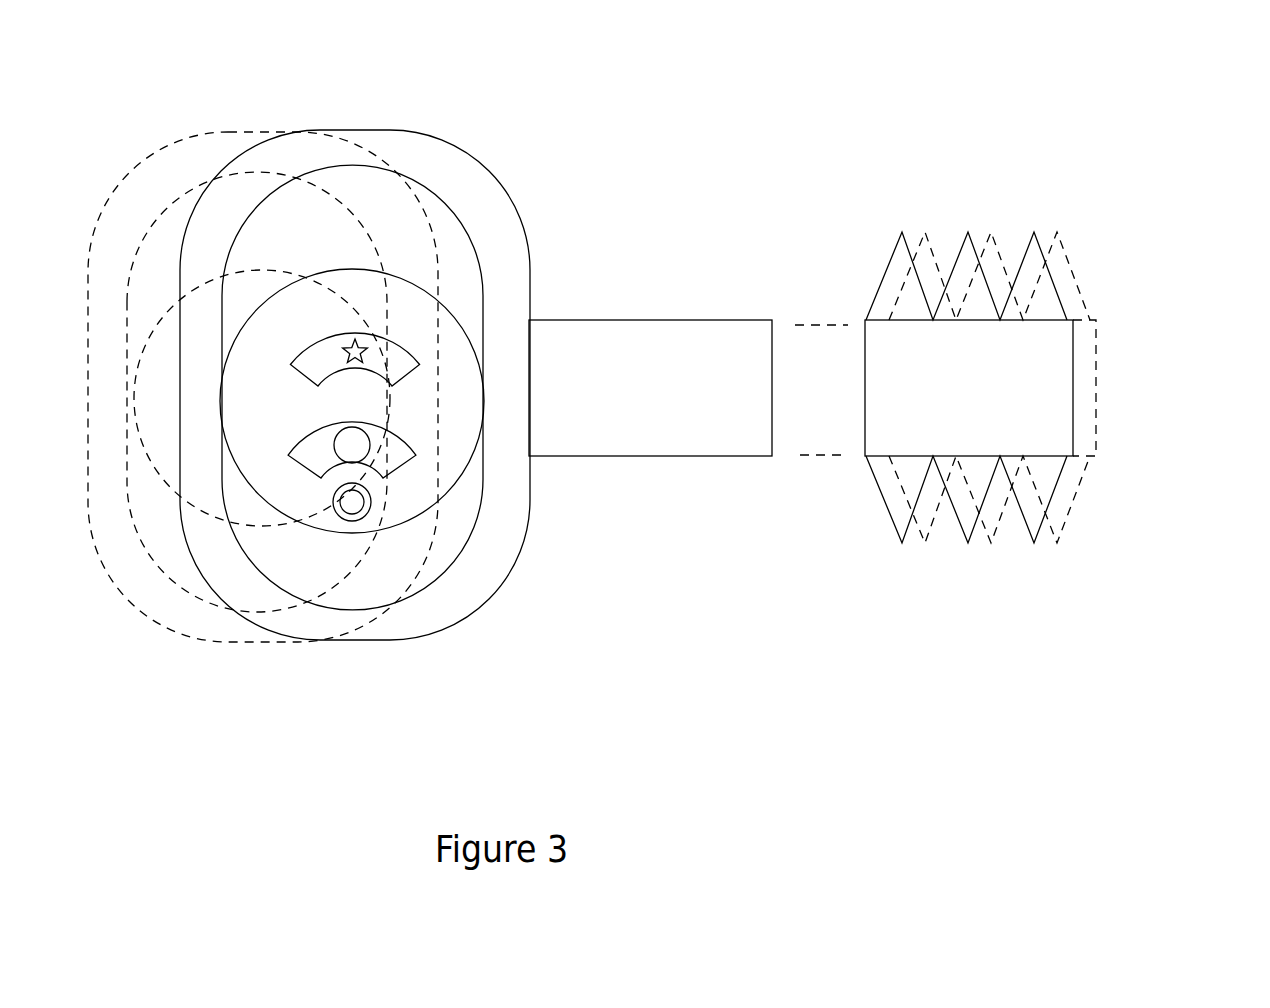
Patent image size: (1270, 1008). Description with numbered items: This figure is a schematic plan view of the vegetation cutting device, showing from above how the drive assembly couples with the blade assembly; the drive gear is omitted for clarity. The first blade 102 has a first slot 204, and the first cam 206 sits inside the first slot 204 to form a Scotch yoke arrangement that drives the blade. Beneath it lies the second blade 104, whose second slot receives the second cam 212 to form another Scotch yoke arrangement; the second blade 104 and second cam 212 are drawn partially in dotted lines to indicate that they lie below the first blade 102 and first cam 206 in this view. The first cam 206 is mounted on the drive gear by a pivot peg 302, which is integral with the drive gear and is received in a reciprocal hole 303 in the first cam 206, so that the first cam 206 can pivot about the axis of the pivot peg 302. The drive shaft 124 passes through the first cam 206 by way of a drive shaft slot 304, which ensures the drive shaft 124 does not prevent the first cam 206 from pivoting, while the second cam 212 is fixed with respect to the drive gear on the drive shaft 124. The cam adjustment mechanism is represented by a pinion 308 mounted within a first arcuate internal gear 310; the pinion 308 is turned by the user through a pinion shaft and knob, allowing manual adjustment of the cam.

The first blade 102 is at (1037, 232).
The second blade 104 is at (1097, 387).
The drive shaft 124 is at (383, 432).
The first slot 204 is at (352, 165).
The first cam 206 is at (443, 302).
The second cam 212 is at (172, 490).
The pivot peg 302 is at (353, 517).
The reciprocal hole 303 is at (353, 520).
The drive shaft slot 304 is at (408, 473).
The pinion 308 is at (342, 343).
The first arcuate internal gear 310 is at (297, 356).